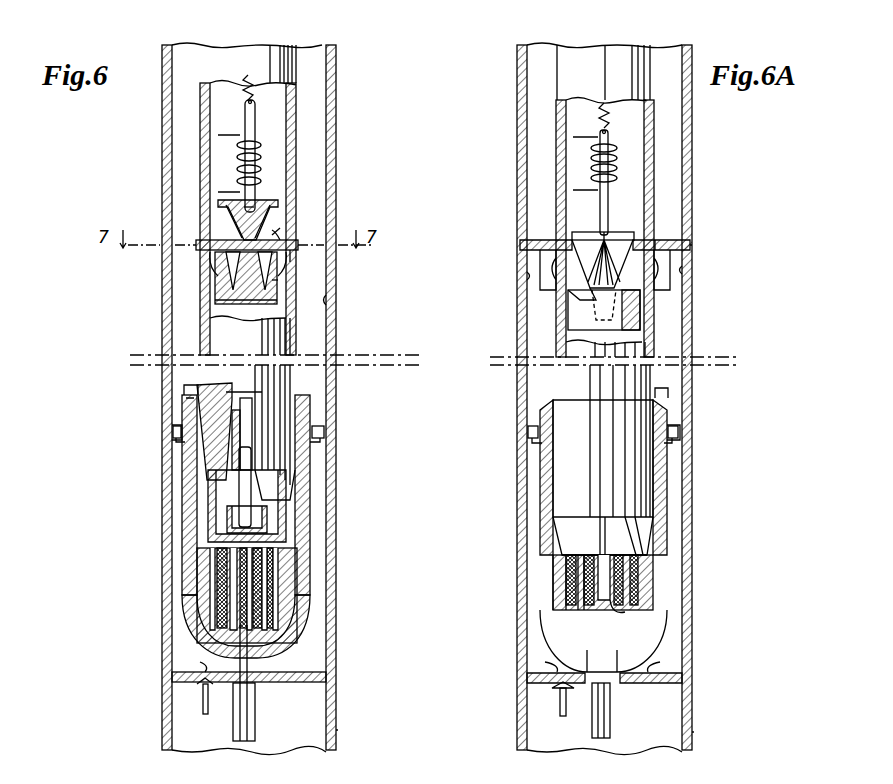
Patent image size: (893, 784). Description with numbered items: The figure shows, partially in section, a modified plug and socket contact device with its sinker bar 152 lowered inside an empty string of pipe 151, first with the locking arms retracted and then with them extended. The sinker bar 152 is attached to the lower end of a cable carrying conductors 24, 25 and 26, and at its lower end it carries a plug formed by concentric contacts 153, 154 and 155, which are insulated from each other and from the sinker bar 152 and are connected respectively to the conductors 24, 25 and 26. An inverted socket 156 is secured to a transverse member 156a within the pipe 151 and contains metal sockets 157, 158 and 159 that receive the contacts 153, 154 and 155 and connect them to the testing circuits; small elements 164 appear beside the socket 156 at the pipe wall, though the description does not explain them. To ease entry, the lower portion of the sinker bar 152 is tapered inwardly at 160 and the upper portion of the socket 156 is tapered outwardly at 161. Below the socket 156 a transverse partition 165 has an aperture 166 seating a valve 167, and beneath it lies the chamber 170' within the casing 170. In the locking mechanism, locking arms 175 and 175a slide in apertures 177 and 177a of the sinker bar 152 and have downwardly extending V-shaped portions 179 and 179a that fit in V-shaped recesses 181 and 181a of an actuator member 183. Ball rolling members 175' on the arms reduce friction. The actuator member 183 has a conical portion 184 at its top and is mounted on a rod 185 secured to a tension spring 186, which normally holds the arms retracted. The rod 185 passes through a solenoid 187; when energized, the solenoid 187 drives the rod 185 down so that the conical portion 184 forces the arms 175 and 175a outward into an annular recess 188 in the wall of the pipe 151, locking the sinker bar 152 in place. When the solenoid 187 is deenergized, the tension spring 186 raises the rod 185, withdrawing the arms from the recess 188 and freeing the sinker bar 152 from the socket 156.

In FIG. 6, the conductor 24 is at (250, 430).
In FIG. 6, the conductor 25 is at (262, 392).
In FIG. 6, the conductor 26 is at (256, 410).
In FIG. 6, the string of pipe 151 is at (162, 138).
In FIG. 6A, the string of pipe 151 is at (520, 143).
In FIG. 6, the sinker bar 152 is at (292, 95).
In FIG. 6A, the sinker bar 152 is at (613, 55).
In FIG. 6, the concentric contact 153 is at (245, 490).
In FIG. 6A, the concentric contact 153 is at (605, 590).
In FIG. 6, the concentric contact 154 is at (230, 512).
In FIG. 6A, the concentric contact 154 is at (580, 590).
In FIG. 6, the concentric contact 155 is at (212, 495).
In FIG. 6A, the concentric contact 155 is at (553, 565).
In FIG. 6, the inverted socket 156 is at (305, 515).
In FIG. 6A, the inverted socket 156 is at (545, 510).
In FIG. 6, the transverse member 156a is at (178, 432).
In FIG. 6A, the transverse member 156a is at (672, 425).
In FIG. 6, the metal socket 157 is at (212, 560).
In FIG. 6A, the metal socket 157 is at (620, 610).
In FIG. 6, the metal socket 158 is at (218, 580).
In FIG. 6A, the metal socket 158 is at (563, 605).
In FIG. 6, the metal socket 159 is at (203, 598).
In FIG. 6A, the metal socket 159 is at (558, 578).
In FIG. 6, the inwardly tapered portion 160 is at (210, 440).
In FIG. 6A, the inwardly tapered portion 160 is at (645, 540).
In FIG. 6, the outwardly tapered portion 161 is at (190, 395).
In FIG. 6A, the outwardly tapered portion 161 is at (665, 395).
In FIG. 6, the key 164 is at (176, 432).
In FIG. 6A, the key 164 is at (528, 432).
In FIG. 6, the transverse partition 165 is at (300, 675).
In FIG. 6A, the transverse partition 165 is at (670, 675).
In FIG. 6, the aperture 166 is at (200, 665).
In FIG. 6A, the aperture 166 is at (560, 670).
In FIG. 6, the valve 167 is at (205, 690).
In FIG. 6A, the valve 167 is at (556, 690).
In FIG. 6, the casing 170 is at (361, 726).
In FIG. 6A, the casing 170 is at (722, 726).
In FIG. 6, the chamber 170' is at (312, 683).
In FIG. 6A, the chamber 170' is at (674, 710).
In FIG. 6, the locking arm 175 is at (200, 216).
In FIG. 6A, the locking arm 175 is at (551, 257).
In FIG. 6, the ball rolling member 175' is at (186, 190).
In FIG. 6A, the ball rolling member 175' is at (685, 210).
In FIG. 6, the locking arm 175a is at (272, 235).
In FIG. 6A, the locking arm 175a is at (690, 245).
In FIG. 6, the aperture 177 is at (222, 262).
In FIG. 6A, the aperture 177 is at (556, 240).
In FIG. 6, the aperture 177a is at (290, 262).
In FIG. 6A, the aperture 177a is at (655, 240).
In FIG. 6, the V-shaped portion 179 is at (230, 275).
In FIG. 6A, the V-shaped portion 179 is at (548, 262).
In FIG. 6, the V-shaped portion 179a is at (270, 270).
In FIG. 6A, the V-shaped portion 179a is at (660, 258).
In FIG. 6, the V-shaped recess 181 is at (240, 290).
In FIG. 6A, the V-shaped recess 181 is at (575, 285).
In FIG. 6, the V-shaped recess 181a is at (272, 290).
In FIG. 6A, the V-shaped recess 181a is at (640, 292).
In FIG. 6, the actuator member 183 is at (262, 300).
In FIG. 6A, the actuator member 183 is at (580, 305).
In FIG. 6, the conical portion 184 is at (278, 240).
In FIG. 6A, the conical portion 184 is at (590, 235).
In FIG. 6, the rod 185 is at (256, 125).
In FIG. 6A, the rod 185 is at (610, 195).
In FIG. 6, the tension spring 186 is at (255, 88).
In FIG. 6A, the tension spring 186 is at (610, 105).
In FIG. 6, the solenoid 187 is at (236, 160).
In FIG. 6A, the solenoid 187 is at (618, 150).
In FIG. 6, the annular recess 188 is at (328, 300).
In FIG. 6A, the annular recess 188 is at (527, 276).